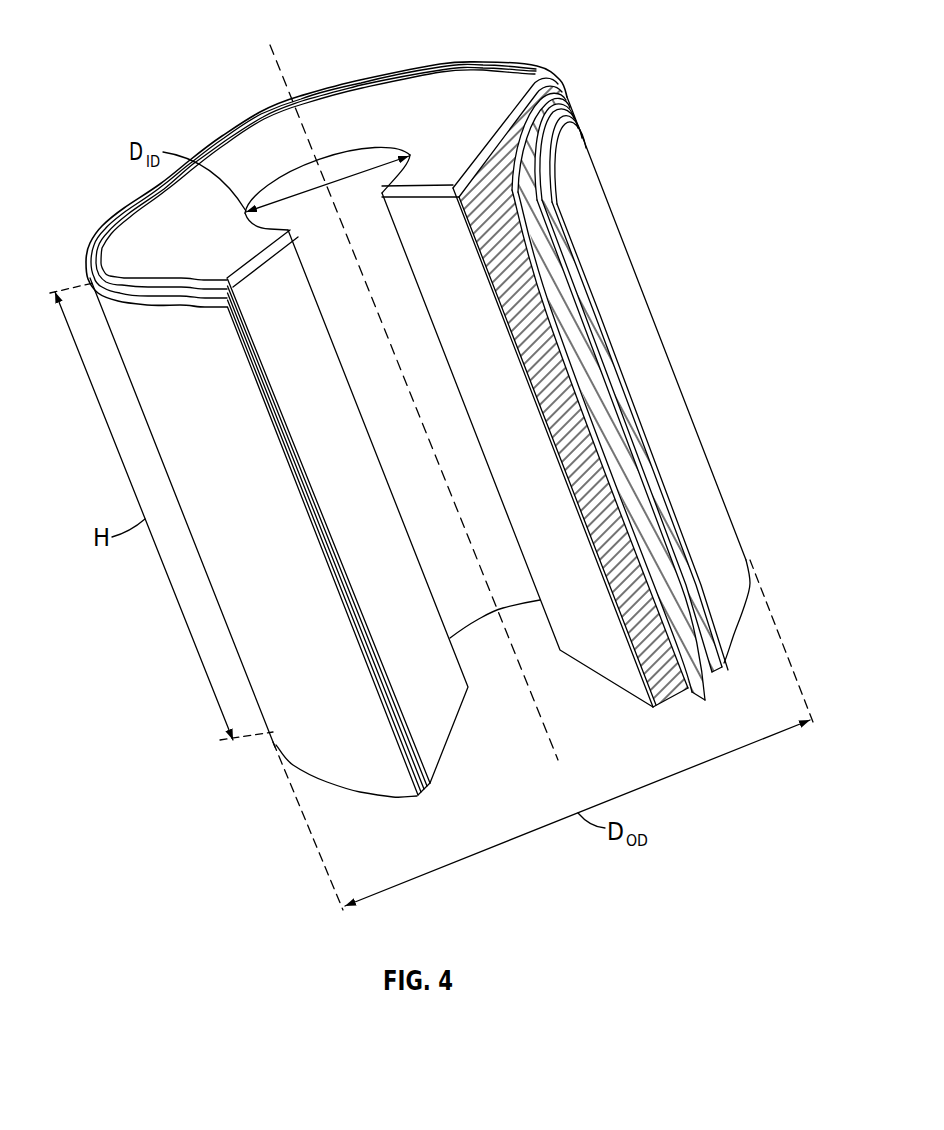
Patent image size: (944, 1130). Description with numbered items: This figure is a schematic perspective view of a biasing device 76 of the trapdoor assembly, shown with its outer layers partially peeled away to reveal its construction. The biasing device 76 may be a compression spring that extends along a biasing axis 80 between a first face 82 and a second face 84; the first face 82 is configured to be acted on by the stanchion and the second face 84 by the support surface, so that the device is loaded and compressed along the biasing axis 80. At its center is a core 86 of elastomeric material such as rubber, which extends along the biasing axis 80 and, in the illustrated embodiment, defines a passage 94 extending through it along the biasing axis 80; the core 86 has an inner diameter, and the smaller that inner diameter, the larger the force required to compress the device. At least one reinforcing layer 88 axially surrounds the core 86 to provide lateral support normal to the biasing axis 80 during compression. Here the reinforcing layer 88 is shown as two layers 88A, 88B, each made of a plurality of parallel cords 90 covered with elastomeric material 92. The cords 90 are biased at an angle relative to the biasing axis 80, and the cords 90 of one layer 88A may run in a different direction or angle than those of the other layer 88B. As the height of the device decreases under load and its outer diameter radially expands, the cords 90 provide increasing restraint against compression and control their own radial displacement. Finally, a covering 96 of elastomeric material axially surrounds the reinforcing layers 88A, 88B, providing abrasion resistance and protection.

The biasing device 76 is at (168, 74).
The biasing axis 80 is at (278, 62).
The first face 82 is at (282, 127).
The second face 84 is at (406, 798).
The core 86 is at (162, 246).
The reinforcing layer 88 is at (496, 158).
The first reinforcing layer 88A is at (507, 248).
The second reinforcing layer 88B is at (568, 265).
The cords 90 is at (684, 616).
The elastomeric material 92 is at (655, 707).
The passage 94 is at (297, 182).
The covering 96 is at (636, 312).